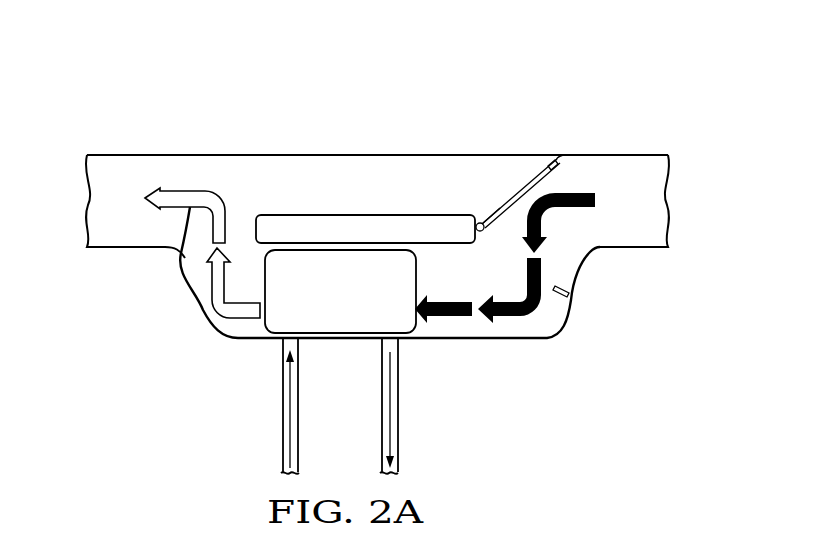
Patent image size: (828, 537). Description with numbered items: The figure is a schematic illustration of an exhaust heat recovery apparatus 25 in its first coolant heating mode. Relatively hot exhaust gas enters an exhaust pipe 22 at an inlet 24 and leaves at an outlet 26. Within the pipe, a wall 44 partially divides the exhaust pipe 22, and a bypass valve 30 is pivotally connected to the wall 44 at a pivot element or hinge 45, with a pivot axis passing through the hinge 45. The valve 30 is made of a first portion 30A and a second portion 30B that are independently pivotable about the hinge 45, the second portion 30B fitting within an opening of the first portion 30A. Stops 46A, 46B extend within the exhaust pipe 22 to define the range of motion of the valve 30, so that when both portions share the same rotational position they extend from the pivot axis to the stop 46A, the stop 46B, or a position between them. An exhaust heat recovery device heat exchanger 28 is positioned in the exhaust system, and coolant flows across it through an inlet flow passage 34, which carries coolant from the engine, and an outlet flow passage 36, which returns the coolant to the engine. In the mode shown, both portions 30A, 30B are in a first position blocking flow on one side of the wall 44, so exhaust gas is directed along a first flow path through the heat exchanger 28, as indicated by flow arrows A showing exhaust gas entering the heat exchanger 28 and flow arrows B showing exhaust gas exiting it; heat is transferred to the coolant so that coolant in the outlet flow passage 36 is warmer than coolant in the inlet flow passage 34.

The exhaust heat recovery apparatus 25 is at (389, 52).
The exhaust pipe 22 is at (367, 155).
The inlet 24 is at (620, 155).
The outlet 26 is at (137, 155).
The exhaust heat recovery device heat exchanger 28 is at (330, 303).
The valve 30 is at (520, 173).
The first portion 30A is at (556, 160).
The second portion 30B is at (511, 207).
The inlet flow passage 34 is at (283, 393).
The outlet flow passage 36 is at (398, 402).
The wall 44 is at (367, 215).
The hinge 45 is at (478, 223).
The stop 46A is at (572, 160).
The stop 46B is at (572, 286).
The flow arrows A is at (570, 207).
The flow arrows B is at (178, 252).